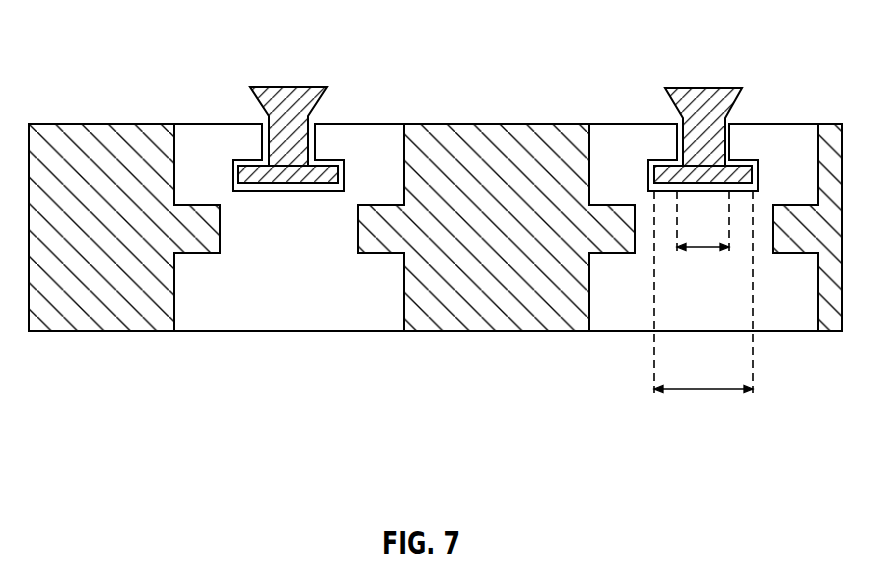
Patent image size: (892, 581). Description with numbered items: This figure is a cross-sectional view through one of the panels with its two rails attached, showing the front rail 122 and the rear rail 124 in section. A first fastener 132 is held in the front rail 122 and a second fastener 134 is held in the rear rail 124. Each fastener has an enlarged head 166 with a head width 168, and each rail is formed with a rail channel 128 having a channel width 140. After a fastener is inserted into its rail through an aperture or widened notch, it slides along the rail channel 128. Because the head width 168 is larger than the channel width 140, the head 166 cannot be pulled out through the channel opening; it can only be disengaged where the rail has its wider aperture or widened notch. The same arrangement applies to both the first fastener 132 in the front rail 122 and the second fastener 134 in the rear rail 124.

The front rail 122 is at (607, 313).
The rear rail 124 is at (285, 313).
The rail channel 128 is at (232, 182).
The first fastener 132 is at (740, 102).
The second fastener 134 is at (290, 97).
The channel width 140 is at (703, 248).
The head 166 is at (313, 187).
The head width 168 is at (703, 392).